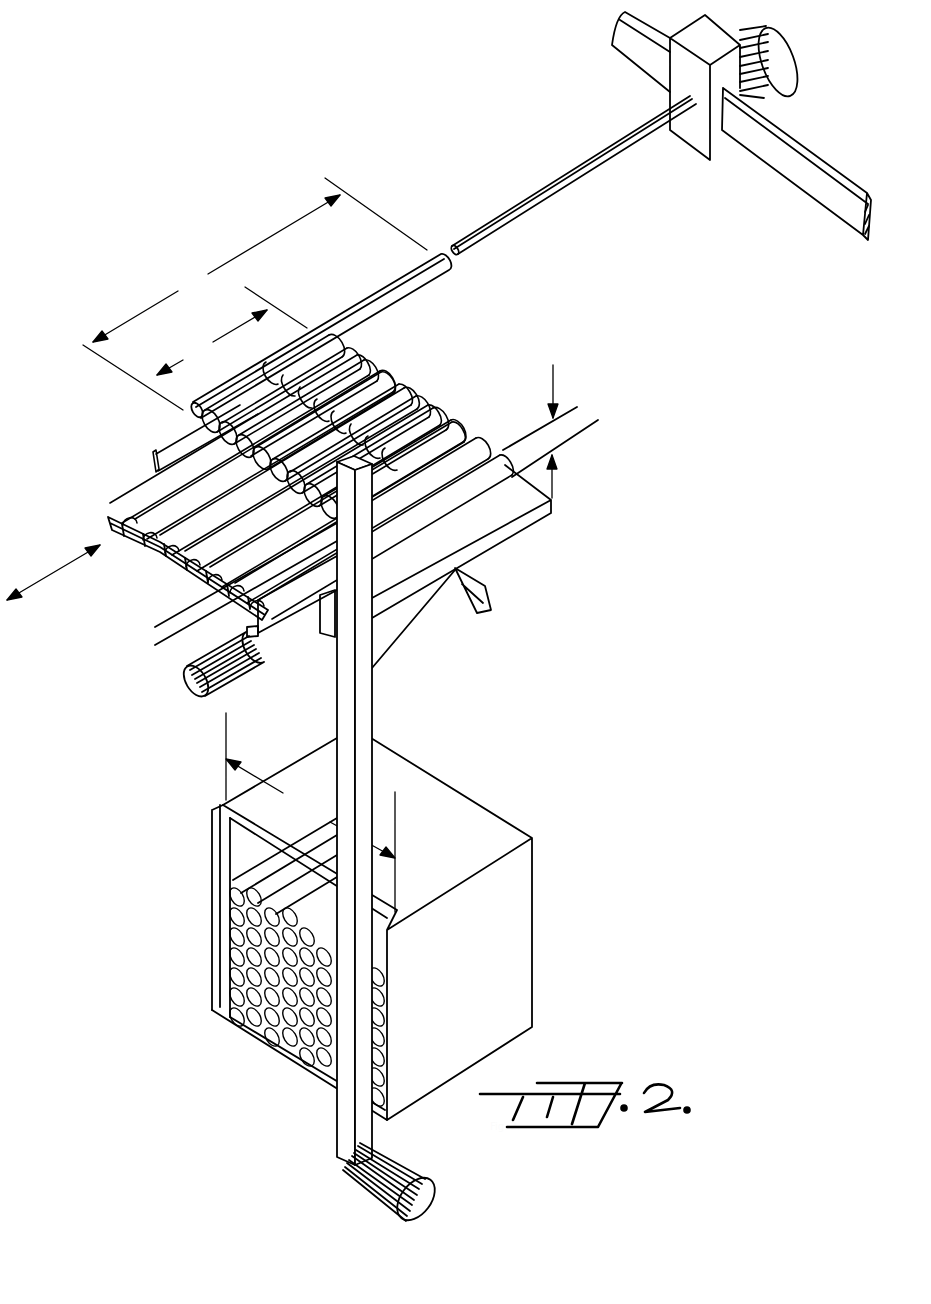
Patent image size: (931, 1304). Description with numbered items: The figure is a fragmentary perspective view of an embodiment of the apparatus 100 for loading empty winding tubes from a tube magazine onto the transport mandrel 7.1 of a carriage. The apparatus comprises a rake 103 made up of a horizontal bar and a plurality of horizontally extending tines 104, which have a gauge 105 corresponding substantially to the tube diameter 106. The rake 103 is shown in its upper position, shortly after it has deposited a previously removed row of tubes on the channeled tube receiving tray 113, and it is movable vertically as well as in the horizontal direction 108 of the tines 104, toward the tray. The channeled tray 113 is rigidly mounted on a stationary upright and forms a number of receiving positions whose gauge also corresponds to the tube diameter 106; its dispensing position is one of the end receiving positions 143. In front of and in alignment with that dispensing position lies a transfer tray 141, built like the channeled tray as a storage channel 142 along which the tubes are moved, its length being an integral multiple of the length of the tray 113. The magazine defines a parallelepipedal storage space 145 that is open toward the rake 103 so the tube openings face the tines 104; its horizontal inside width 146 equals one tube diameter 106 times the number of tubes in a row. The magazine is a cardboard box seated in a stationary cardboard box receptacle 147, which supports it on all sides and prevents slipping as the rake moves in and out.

The transport mandrel 7.1 is at (530, 200).
The apparatus 100 is at (237, 1053).
The rake 103 is at (150, 587).
The tines 104 is at (154, 510).
The gauge 105 is at (200, 624).
The diameter 106 is at (562, 432).
The horizontal direction 108 is at (63, 567).
The channeled tube receiving tray 113 is at (510, 508).
The transfer tray 141 is at (353, 272).
The storage channel 142 is at (403, 285).
The end receiving positions 143 is at (190, 413).
The parallelepipedal storage space 145 is at (247, 843).
The horizontal inside width 146 is at (310, 812).
The cardboard box receptacle 147 is at (228, 966).